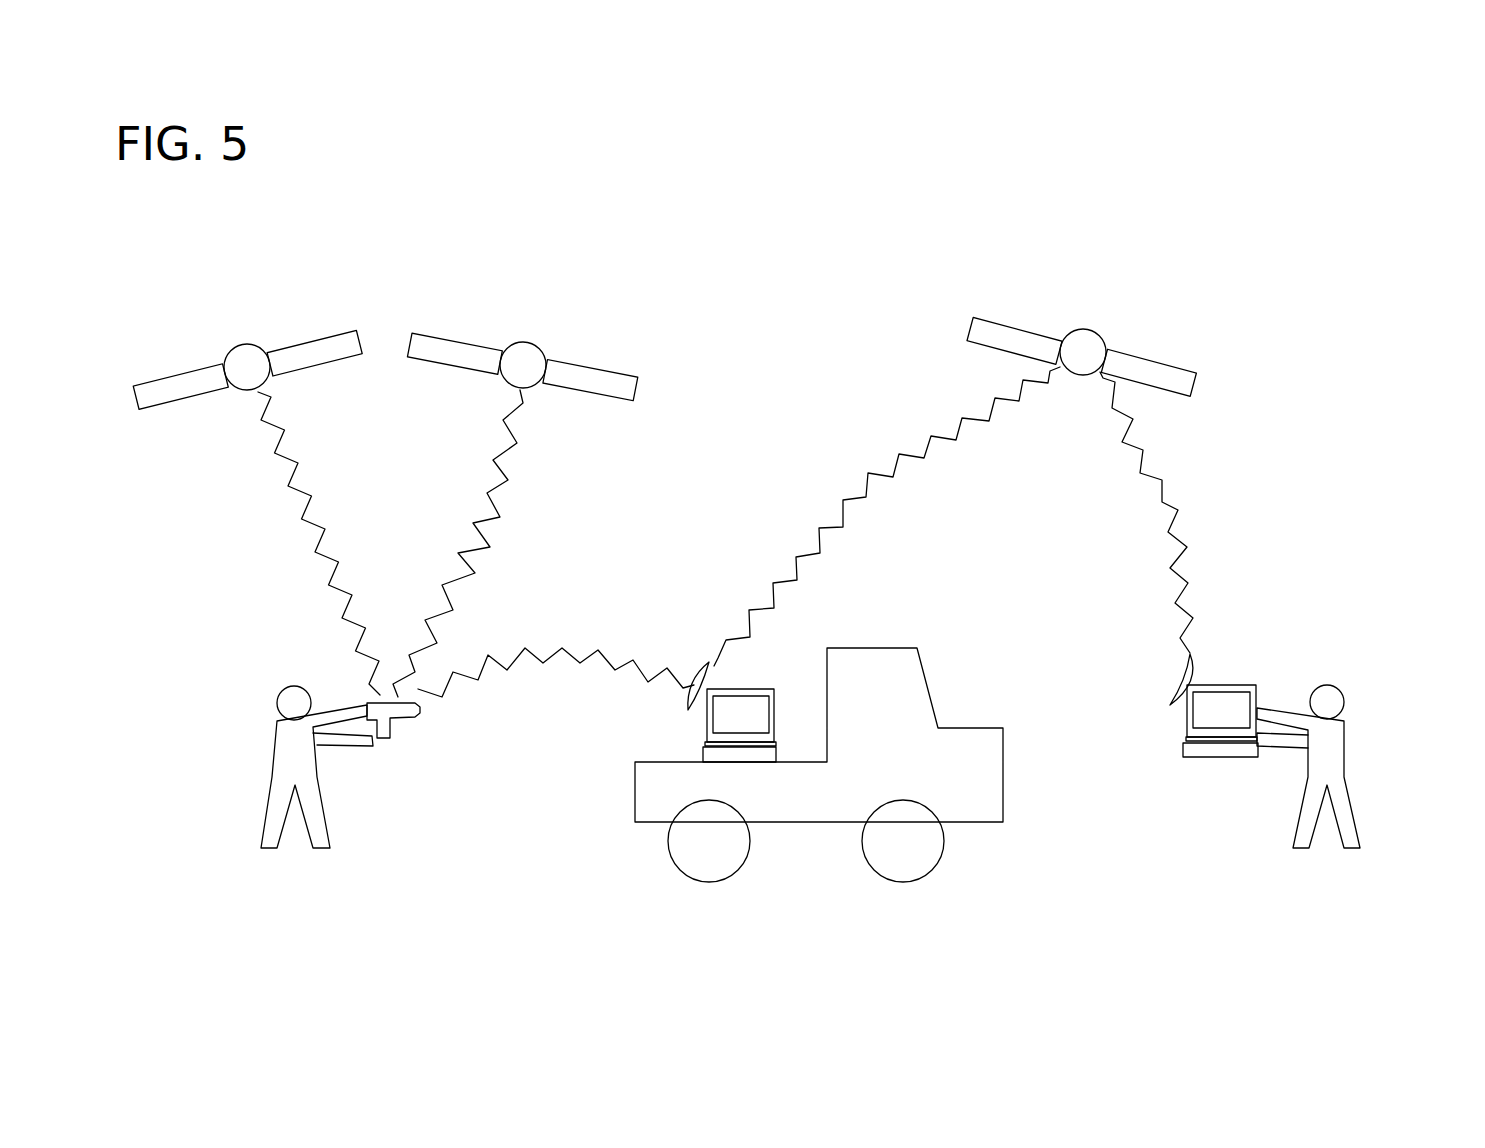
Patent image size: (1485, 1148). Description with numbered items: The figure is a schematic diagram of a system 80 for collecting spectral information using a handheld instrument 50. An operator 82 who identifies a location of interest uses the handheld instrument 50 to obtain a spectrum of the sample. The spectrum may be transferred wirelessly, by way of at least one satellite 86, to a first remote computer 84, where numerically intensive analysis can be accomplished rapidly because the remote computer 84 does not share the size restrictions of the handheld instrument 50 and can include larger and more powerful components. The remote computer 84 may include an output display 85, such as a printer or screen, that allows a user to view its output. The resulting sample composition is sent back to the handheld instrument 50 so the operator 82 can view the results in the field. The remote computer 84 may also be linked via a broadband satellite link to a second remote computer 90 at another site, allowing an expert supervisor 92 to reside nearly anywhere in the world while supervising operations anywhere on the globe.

The system 80 is at (788, 298).
The operator 82 is at (277, 732).
The handheld instrument 50 is at (418, 720).
The satellite 86 is at (535, 342).
The first remote computer 84 is at (700, 752).
The output display 85 is at (764, 688).
The second remote computer 90 is at (1220, 758).
The supervisor 92 is at (1347, 747).